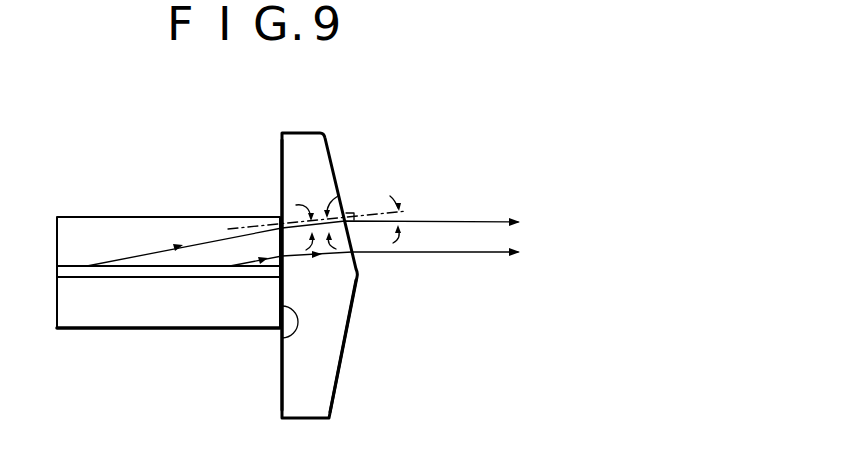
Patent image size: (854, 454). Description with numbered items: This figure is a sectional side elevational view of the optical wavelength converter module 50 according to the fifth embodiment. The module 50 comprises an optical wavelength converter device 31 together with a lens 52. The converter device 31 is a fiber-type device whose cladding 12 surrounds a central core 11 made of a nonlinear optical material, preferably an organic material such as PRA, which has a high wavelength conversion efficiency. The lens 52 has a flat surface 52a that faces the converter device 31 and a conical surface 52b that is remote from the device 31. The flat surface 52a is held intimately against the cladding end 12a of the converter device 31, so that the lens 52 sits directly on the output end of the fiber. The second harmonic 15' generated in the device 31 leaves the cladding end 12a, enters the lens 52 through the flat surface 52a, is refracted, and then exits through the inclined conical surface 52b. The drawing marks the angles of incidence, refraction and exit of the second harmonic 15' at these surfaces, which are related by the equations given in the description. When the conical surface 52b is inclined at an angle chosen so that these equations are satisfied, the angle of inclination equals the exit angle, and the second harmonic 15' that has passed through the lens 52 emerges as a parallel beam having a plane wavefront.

The optical wavelength converter module 50 is at (320, 245).
The lens 52 is at (358, 320).
The flat surface 52a is at (283, 387).
The conical surface 52b is at (337, 382).
The cladding 12 is at (83, 233).
The cladding end 12a is at (283, 338).
The core 11 is at (84, 272).
The optical wavelength converter device 31 is at (157, 208).
The second harmonic 15' is at (303, 216).